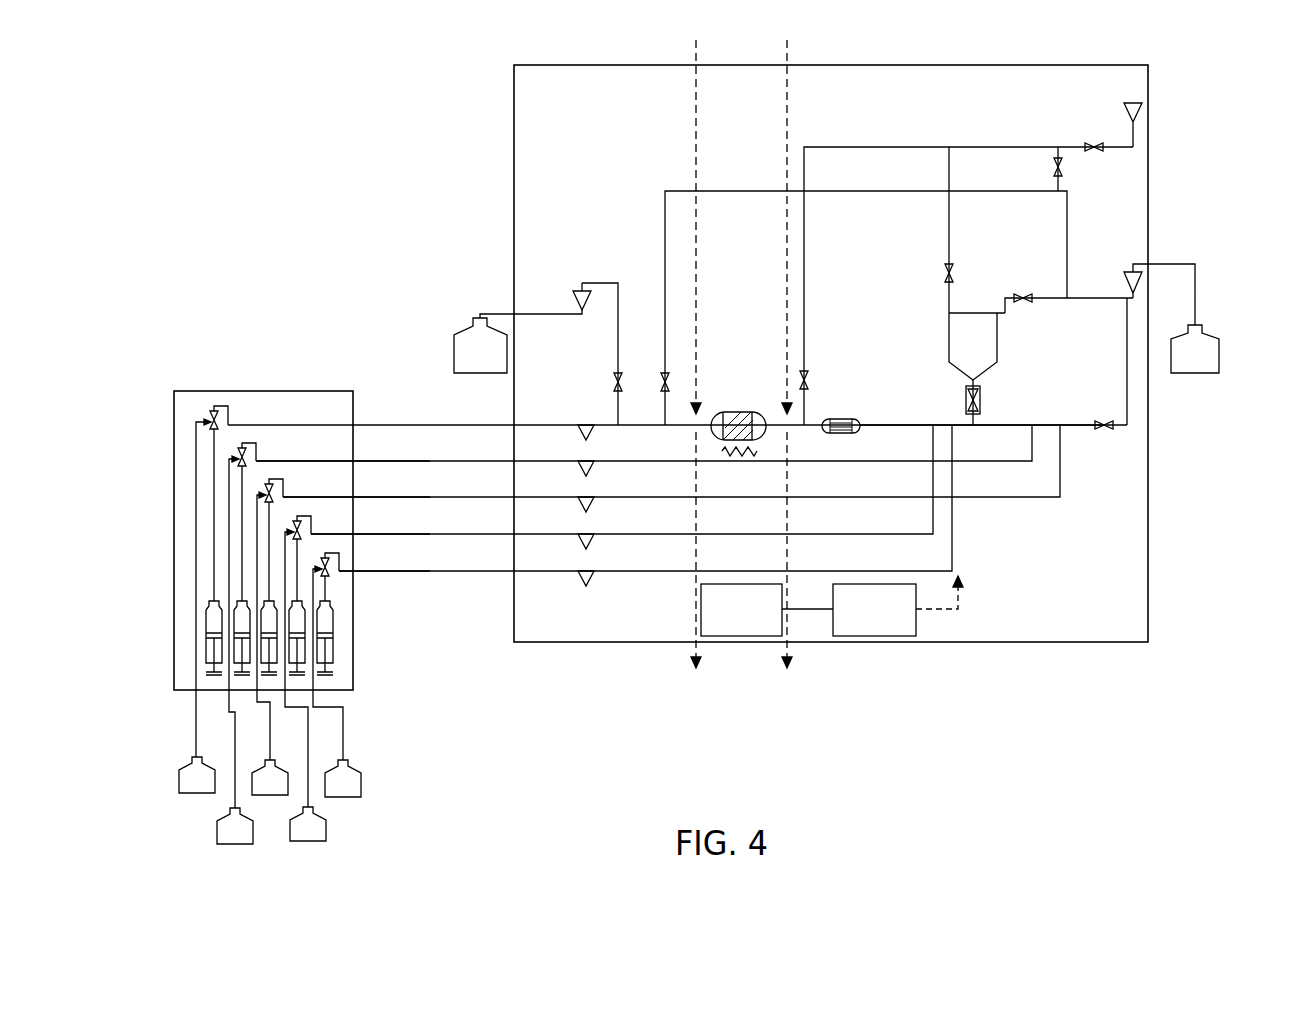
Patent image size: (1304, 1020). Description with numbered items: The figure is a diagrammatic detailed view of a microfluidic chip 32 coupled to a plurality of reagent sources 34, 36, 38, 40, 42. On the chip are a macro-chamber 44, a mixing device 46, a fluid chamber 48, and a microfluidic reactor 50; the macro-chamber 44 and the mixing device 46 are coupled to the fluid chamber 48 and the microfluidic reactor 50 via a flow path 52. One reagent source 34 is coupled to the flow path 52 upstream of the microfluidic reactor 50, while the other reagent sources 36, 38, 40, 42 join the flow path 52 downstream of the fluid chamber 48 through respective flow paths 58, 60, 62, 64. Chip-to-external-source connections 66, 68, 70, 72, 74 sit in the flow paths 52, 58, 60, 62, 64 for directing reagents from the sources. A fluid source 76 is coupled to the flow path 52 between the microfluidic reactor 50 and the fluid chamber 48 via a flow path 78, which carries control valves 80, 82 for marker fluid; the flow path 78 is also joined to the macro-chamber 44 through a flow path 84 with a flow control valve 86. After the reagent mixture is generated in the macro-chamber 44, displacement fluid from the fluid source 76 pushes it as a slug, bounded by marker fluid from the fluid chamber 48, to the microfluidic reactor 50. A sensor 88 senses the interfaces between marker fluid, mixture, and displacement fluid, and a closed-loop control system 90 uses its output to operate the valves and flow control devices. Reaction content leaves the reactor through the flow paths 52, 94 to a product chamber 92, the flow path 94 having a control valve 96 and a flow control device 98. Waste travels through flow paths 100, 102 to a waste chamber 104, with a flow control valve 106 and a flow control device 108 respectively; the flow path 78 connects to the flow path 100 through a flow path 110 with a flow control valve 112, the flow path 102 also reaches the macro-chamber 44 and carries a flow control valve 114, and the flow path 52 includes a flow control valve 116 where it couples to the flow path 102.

The microfluidic chip 32 is at (233, 151).
The reagent source 34 is at (178, 781).
The reagent source 36 is at (216, 832).
The reagent source 38 is at (270, 796).
The reagent source 40 is at (327, 830).
The reagent source 42 is at (362, 785).
The macro-chamber 44 is at (997, 338).
The mixing device 46 is at (981, 400).
The fluid chamber 48 is at (845, 435).
The microfluidic reactor 50 is at (735, 410).
The flow path 52 is at (914, 423).
The flow path 58 is at (408, 463).
The flow path 60 is at (408, 499).
The flow path 62 is at (408, 536).
The flow path 64 is at (408, 573).
The chip-to-external-source connection 66 is at (592, 432).
The chip-to-external-source connection 68 is at (592, 468).
The chip-to-external-source connection 70 is at (592, 504).
The chip-to-external-source connection 72 is at (592, 541).
The chip-to-external-source connection 74 is at (592, 578).
The fluid source 76 is at (1130, 101).
The flow path 78 is at (886, 146).
The control valve 80 is at (1089, 145).
The control valve 82 is at (813, 381).
The flow path 84 is at (950, 222).
The flow control valve 86 is at (943, 278).
The sensor 88 is at (742, 637).
The control system 90 is at (876, 637).
The product chamber 92 is at (453, 358).
The flow path 94 is at (621, 322).
The control valve 96 is at (612, 382).
The flow control device 98 is at (578, 297).
The flow path 100 is at (722, 189).
The flow path 102 is at (1106, 296).
The waste chamber 104 is at (1220, 357).
The flow control valve 106 is at (660, 382).
The flow control device 108 is at (1130, 270).
The flow path 110 is at (1052, 176).
The flow control valve 112 is at (1066, 174).
The flow control valve 114 is at (1019, 294).
The flow control valve 116 is at (1100, 420).